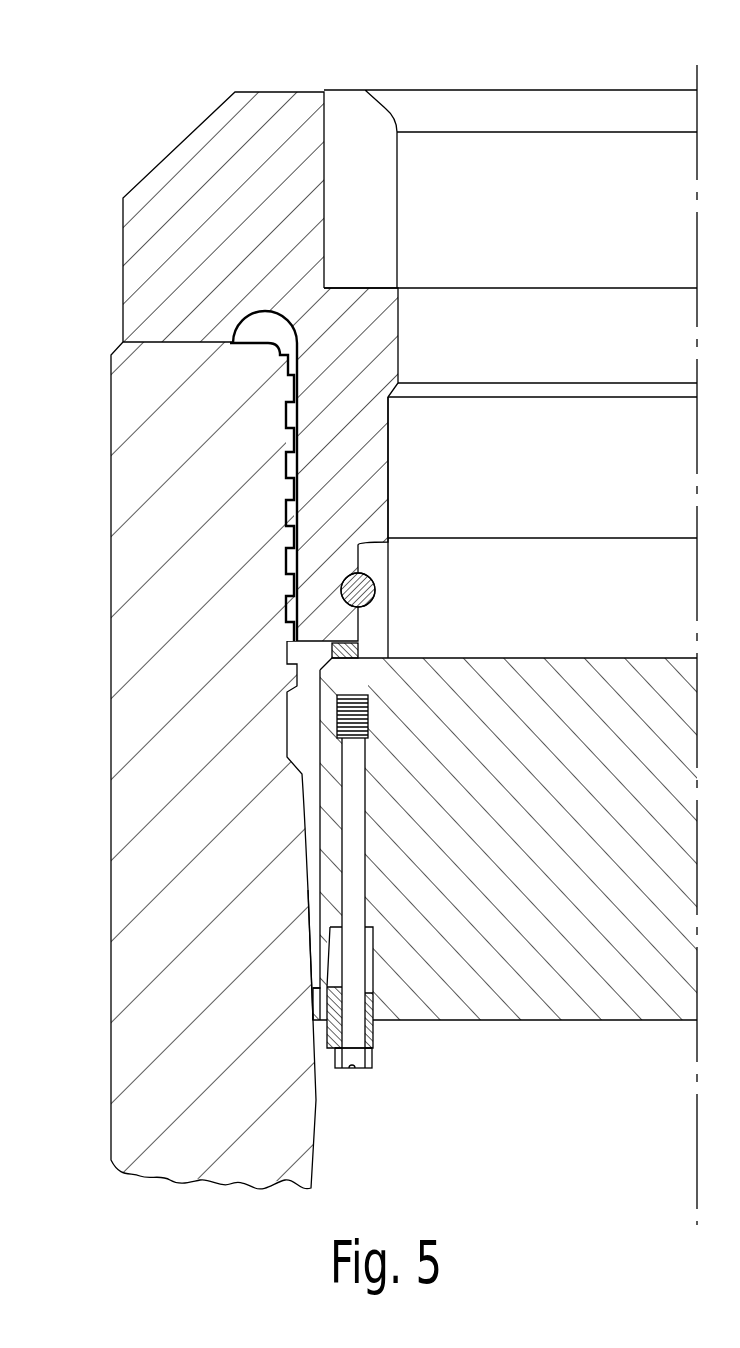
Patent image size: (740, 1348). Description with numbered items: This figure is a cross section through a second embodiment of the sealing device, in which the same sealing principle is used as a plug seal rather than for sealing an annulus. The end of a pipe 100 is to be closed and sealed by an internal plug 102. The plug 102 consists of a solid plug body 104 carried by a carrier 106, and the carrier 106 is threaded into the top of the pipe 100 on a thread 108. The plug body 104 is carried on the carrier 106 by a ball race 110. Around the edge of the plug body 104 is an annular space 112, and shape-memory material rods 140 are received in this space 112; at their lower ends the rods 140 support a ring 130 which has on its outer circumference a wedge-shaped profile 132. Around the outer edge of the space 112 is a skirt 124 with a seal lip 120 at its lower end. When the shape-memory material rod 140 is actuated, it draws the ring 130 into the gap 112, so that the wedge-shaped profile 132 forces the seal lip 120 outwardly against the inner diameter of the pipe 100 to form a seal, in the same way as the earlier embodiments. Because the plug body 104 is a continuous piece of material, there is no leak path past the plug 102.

The pipe 100 is at (140, 732).
The plug 102 is at (463, 82).
The plug body 104 is at (558, 985).
The carrier 106 is at (185, 182).
The thread 108 is at (287, 466).
The ball race 110 is at (362, 598).
The annular space 112 is at (340, 971).
The seal lip 120 is at (313, 990).
The skirt 124 is at (330, 950).
The ring 130 is at (378, 1026).
The wedge-shaped profile 132 is at (332, 1040).
The shape-memory material rod 140 is at (350, 906).